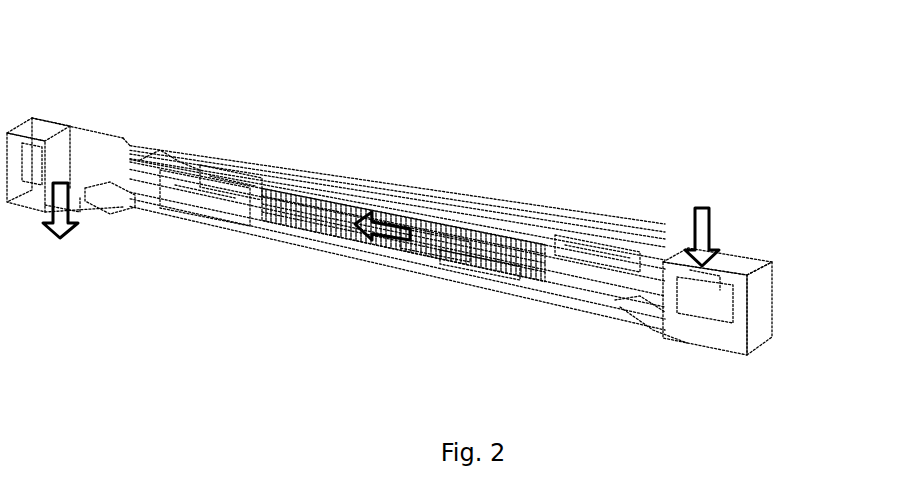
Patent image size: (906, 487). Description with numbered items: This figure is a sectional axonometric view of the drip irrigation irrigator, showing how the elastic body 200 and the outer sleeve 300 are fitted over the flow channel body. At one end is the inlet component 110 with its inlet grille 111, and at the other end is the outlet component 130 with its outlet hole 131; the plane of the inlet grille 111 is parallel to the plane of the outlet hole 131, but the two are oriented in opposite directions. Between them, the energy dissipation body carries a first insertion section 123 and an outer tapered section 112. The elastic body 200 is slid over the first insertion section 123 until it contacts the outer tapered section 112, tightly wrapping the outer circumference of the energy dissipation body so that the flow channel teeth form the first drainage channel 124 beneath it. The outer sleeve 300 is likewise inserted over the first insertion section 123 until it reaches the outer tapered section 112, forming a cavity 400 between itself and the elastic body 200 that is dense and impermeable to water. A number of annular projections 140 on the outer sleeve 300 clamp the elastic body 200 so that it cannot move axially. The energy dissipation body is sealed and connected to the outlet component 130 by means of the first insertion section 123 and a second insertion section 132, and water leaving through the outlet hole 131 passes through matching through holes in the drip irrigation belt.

The inlet component 110 is at (741, 266).
The inlet grille 111 is at (665, 351).
The outer tapered section 112 is at (596, 362).
The first insertion section 123 is at (226, 275).
The first drainage channel 124 is at (430, 324).
The outlet component 130 is at (66, 115).
The outlet hole 131 is at (88, 267).
The second insertion section 132 is at (141, 265).
The annular projections 140 is at (454, 141).
The elastic body 200 is at (417, 187).
The outer sleeve 300 is at (405, 197).
The cavity 400 is at (460, 163).